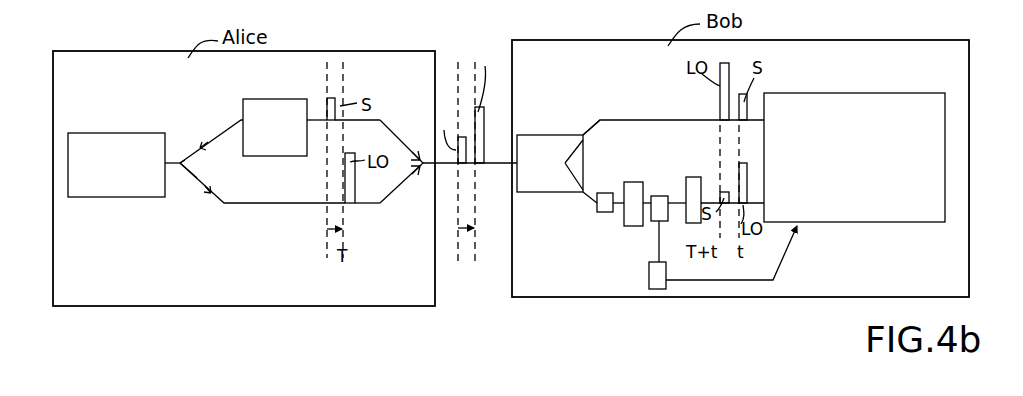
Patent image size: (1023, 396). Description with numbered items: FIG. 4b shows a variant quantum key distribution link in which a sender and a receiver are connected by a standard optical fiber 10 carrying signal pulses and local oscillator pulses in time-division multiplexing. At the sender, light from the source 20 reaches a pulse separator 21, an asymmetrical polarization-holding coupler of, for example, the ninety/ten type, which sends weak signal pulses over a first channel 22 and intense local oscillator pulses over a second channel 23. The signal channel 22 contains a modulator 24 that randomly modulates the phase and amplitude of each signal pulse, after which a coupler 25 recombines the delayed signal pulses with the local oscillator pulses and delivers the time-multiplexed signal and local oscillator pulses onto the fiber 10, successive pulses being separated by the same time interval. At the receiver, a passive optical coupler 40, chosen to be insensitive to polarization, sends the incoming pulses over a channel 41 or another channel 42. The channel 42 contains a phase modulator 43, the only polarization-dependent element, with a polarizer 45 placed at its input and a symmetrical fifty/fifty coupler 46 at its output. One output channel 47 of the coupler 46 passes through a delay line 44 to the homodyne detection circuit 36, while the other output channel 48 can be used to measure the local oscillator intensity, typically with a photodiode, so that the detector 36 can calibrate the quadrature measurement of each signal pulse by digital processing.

The optical fiber 10 is at (493, 165).
The source 20 is at (103, 133).
The pulse separator 21 is at (182, 166).
The first channel 22 is at (240, 120).
The second channel 23 is at (224, 205).
The modulator 24 is at (277, 110).
The coupler 25 is at (409, 192).
The homodyne detection circuit 36 is at (912, 222).
The optical coupler 40 is at (560, 140).
The channel 41 is at (589, 125).
The channel 42 is at (588, 190).
The phase modulator 43 is at (599, 138).
The delay line 44 is at (693, 177).
The polarizer 45 is at (603, 213).
The symmetrical coupler 46 is at (634, 183).
The output channel 47 is at (659, 196).
The output channel 48 is at (657, 238).